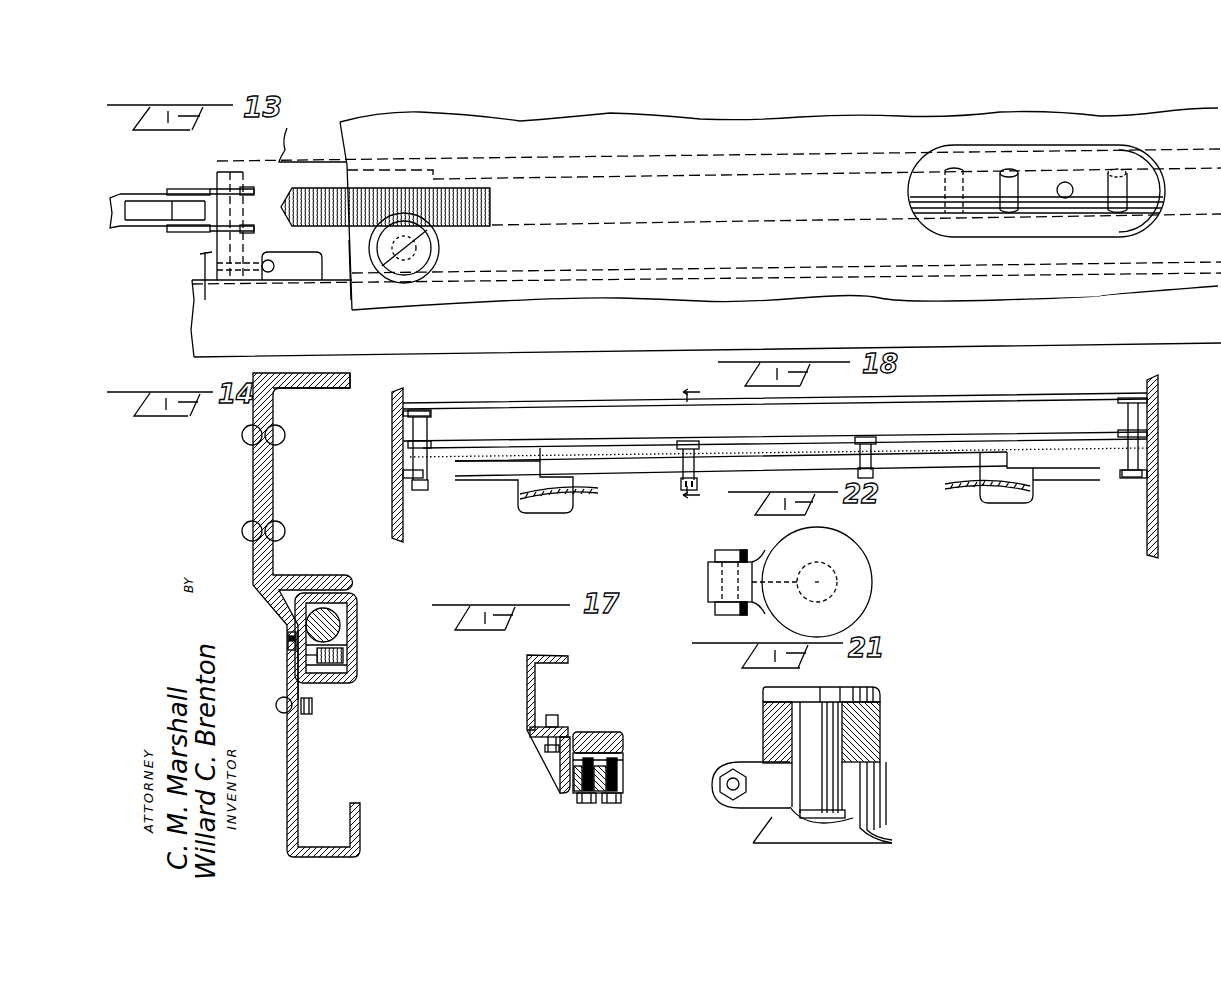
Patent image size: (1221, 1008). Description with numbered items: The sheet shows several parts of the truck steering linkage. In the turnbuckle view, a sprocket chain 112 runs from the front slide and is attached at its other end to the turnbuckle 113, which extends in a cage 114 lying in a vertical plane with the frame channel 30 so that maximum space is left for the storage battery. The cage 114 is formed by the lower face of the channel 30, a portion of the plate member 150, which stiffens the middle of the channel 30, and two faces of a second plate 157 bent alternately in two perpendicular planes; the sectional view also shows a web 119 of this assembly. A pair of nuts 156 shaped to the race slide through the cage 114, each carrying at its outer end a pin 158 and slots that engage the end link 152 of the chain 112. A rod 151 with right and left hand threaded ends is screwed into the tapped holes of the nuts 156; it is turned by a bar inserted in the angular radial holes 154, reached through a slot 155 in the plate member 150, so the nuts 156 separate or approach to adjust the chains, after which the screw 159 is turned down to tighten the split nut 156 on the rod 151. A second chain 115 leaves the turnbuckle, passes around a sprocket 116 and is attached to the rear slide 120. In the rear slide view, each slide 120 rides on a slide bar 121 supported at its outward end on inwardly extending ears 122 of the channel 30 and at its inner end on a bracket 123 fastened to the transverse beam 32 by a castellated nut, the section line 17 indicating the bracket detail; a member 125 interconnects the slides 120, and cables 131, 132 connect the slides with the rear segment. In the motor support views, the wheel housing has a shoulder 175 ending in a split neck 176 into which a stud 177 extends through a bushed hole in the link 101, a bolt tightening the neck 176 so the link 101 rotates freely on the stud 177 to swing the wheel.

In FIG. 13, the sprocket chain 112 is at (114, 195).
In FIG. 13, the turnbuckle 113 is at (674, 176).
In FIG. 13, the rod 151 is at (551, 182).
In FIG. 13, the end link 152 is at (214, 234).
In FIG. 13, the radial holes 154 is at (950, 170).
In FIG. 13, the slot 155 is at (1093, 152).
In FIG. 13, the nuts 156 is at (213, 252).
In FIG. 13, the pin 158 is at (247, 152).
In FIG. 13, the screw 159 is at (441, 265).
In FIG. 14, the screw 159 is at (294, 639).
In FIG. 14, the channel 30 is at (315, 385).
In FIG. 18, the channel 30 is at (398, 498).
In FIG. 14, the plate member 150 is at (256, 503).
In FIG. 14, the web 119 is at (298, 616).
In FIG. 14, the cage 114 is at (347, 632).
In FIG. 14, the second plate 157 is at (355, 650).
In FIG. 18, the transverse beam 32 is at (573, 393).
In FIG. 17, the transverse beam 32 is at (527, 677).
In FIG. 18, the section line 17 is at (702, 449).
In FIG. 18, the sprocket 116 is at (410, 447).
In FIG. 18, the chain 115 is at (411, 481).
In FIG. 18, the ears 122 is at (403, 495).
In FIG. 18, the rear slide 120 is at (528, 484).
In FIG. 18, the slide bar 121 is at (606, 480).
In FIG. 18, the cable 131 is at (592, 502).
In FIG. 18, the cable 132 is at (967, 488).
In FIG. 18, the member 125 is at (717, 473).
In FIG. 17, the member 125 is at (625, 745).
In FIG. 18, the bracket 123 is at (700, 476).
In FIG. 17, the bracket 123 is at (545, 765).
In FIG. 22, the split neck 176 is at (710, 574).
In FIG. 21, the split neck 176 is at (754, 768).
In FIG. 22, the stud 177 is at (850, 562).
In FIG. 21, the stud 177 is at (878, 697).
In FIG. 21, the link 101 is at (870, 722).
In FIG. 21, the shoulder 175 is at (880, 817).